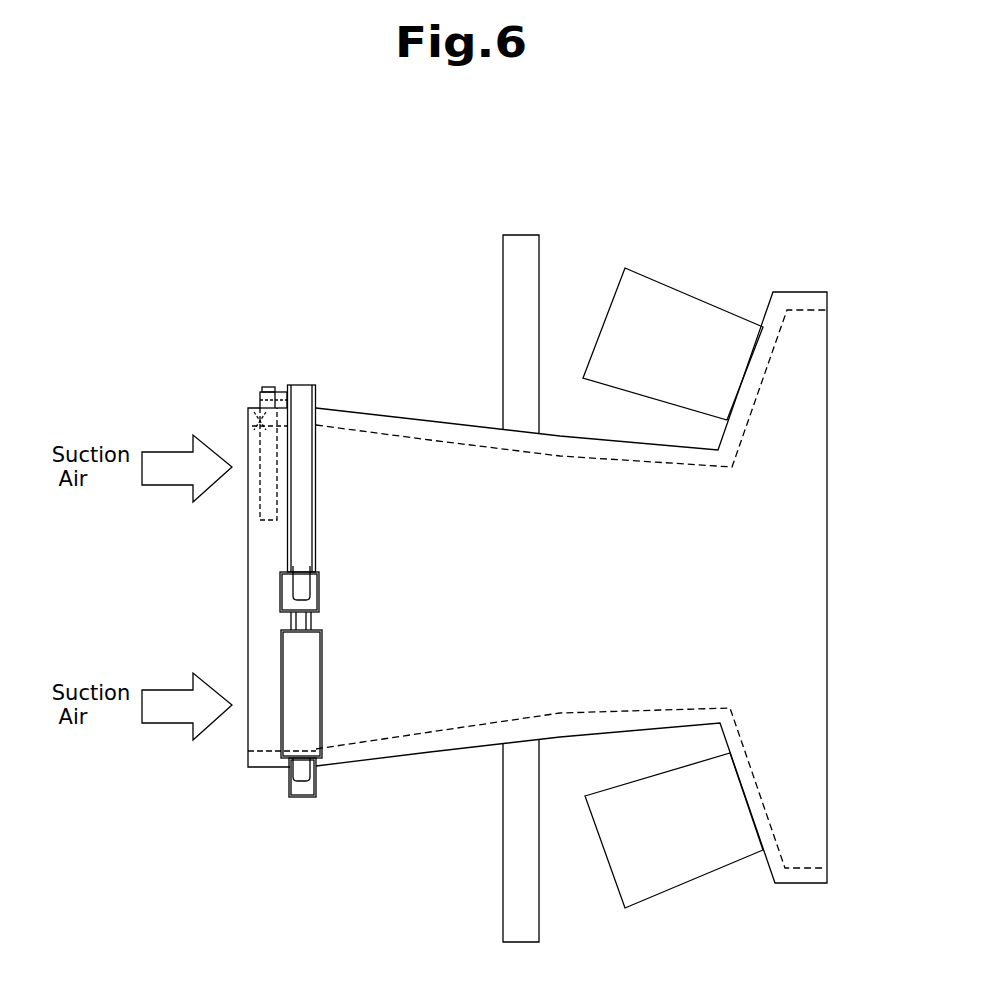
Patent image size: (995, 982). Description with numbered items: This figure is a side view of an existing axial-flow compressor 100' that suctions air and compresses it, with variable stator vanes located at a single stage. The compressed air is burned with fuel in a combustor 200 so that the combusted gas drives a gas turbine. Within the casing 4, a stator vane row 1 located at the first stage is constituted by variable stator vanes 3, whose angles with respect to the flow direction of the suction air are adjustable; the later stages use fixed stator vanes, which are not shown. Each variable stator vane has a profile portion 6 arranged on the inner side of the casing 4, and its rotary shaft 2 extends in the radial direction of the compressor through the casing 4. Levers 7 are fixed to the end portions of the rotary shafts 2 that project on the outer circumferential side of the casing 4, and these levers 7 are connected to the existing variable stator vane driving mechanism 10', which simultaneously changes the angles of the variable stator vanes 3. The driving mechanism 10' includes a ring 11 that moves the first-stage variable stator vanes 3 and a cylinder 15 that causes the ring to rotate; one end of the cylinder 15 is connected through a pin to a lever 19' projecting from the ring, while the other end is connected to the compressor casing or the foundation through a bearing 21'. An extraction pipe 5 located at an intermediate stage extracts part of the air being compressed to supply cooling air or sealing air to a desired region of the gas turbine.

The stator vane row 1 is at (263, 410).
The rotary shaft 2 is at (270, 387).
The variable stator vanes 3 is at (248, 440).
The casing 4 is at (827, 292).
The extraction pipe 5 is at (539, 240).
The profile portions 6 is at (252, 482).
The levers 7 is at (258, 390).
The existing variable stator vane driving mechanism 10' is at (286, 552).
The tube 11 is at (297, 384).
The cylinder 15 is at (281, 666).
The connecting portion 19' is at (258, 592).
The bearing 21' is at (258, 779).
The existing axial-flow compressor 100' is at (286, 508).
The combustor 200 is at (690, 297).